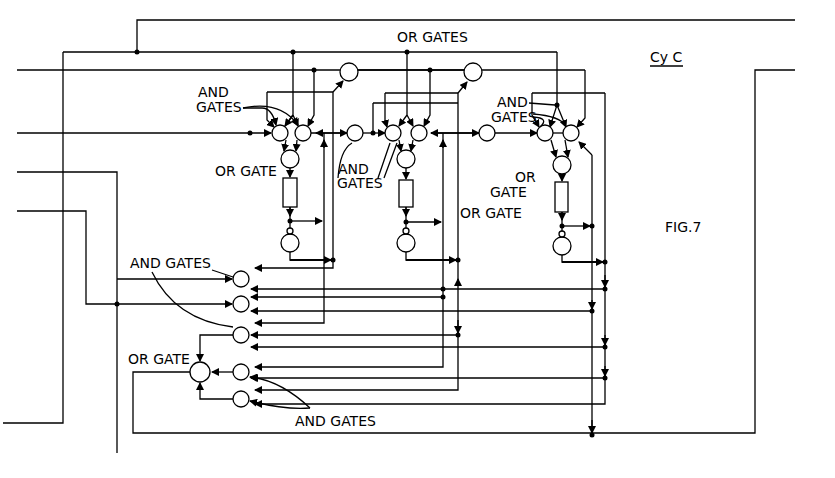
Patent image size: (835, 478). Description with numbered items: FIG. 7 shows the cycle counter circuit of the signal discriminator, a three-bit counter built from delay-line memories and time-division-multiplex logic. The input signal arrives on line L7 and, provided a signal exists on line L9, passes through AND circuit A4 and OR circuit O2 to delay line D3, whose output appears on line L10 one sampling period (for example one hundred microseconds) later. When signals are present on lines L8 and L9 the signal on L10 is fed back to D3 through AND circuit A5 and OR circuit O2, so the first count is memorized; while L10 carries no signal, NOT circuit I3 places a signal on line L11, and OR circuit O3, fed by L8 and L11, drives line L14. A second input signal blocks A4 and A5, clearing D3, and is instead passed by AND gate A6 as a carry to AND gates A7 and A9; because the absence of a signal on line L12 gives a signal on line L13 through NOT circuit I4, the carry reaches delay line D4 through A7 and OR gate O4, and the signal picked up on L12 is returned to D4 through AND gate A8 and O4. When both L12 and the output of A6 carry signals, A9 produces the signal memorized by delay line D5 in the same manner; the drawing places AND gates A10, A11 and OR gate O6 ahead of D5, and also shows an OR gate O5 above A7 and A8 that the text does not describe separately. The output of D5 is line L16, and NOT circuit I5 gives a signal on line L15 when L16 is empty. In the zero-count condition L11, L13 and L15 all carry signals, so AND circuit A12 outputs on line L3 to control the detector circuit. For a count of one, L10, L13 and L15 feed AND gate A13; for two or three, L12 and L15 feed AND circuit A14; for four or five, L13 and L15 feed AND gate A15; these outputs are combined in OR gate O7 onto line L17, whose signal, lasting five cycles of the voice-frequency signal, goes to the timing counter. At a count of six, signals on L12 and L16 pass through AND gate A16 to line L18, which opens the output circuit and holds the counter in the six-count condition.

The line L3 is at (124, 304).
The line L7 is at (144, 124).
The line L8 is at (301, 61).
The line L9 is at (399, 221).
The line L10 is at (291, 222).
The line L11 is at (327, 263).
The line L12 is at (423, 213).
The line L13 is at (447, 263).
The line L14 is at (411, 63).
The line L15 is at (599, 264).
The line L16 is at (558, 227).
The line L17 is at (465, 243).
The line L18 is at (124, 326).
The AND circuit A4 is at (272, 142).
The AND circuit A5 is at (308, 142).
The AND gate A6 is at (354, 142).
The AND gate A7 is at (388, 142).
The AND gate A8 is at (423, 142).
The AND circuit A9 is at (486, 142).
The AND gate A10 is at (541, 142).
The AND gate A11 is at (585, 135).
The AND circuit A12 is at (237, 273).
The AND gate A13 is at (219, 331).
The AND circuit A14 is at (252, 360).
The AND gate A15 is at (195, 422).
The AND gate A16 is at (213, 300).
The OR circuit O2 is at (271, 168).
The OR circuit O3 is at (395, 40).
The OR gate O4 is at (463, 203).
The OR gate O5 is at (471, 40).
The OR gate O6 is at (540, 174).
The OR circuit O7 is at (191, 366).
The delay line D3 is at (283, 200).
The delay line D4 is at (393, 224).
The delay line D5 is at (610, 190).
The NOT circuit I3 is at (257, 238).
The NOT circuit I4 is at (466, 240).
The NOT circuit I5 is at (519, 241).